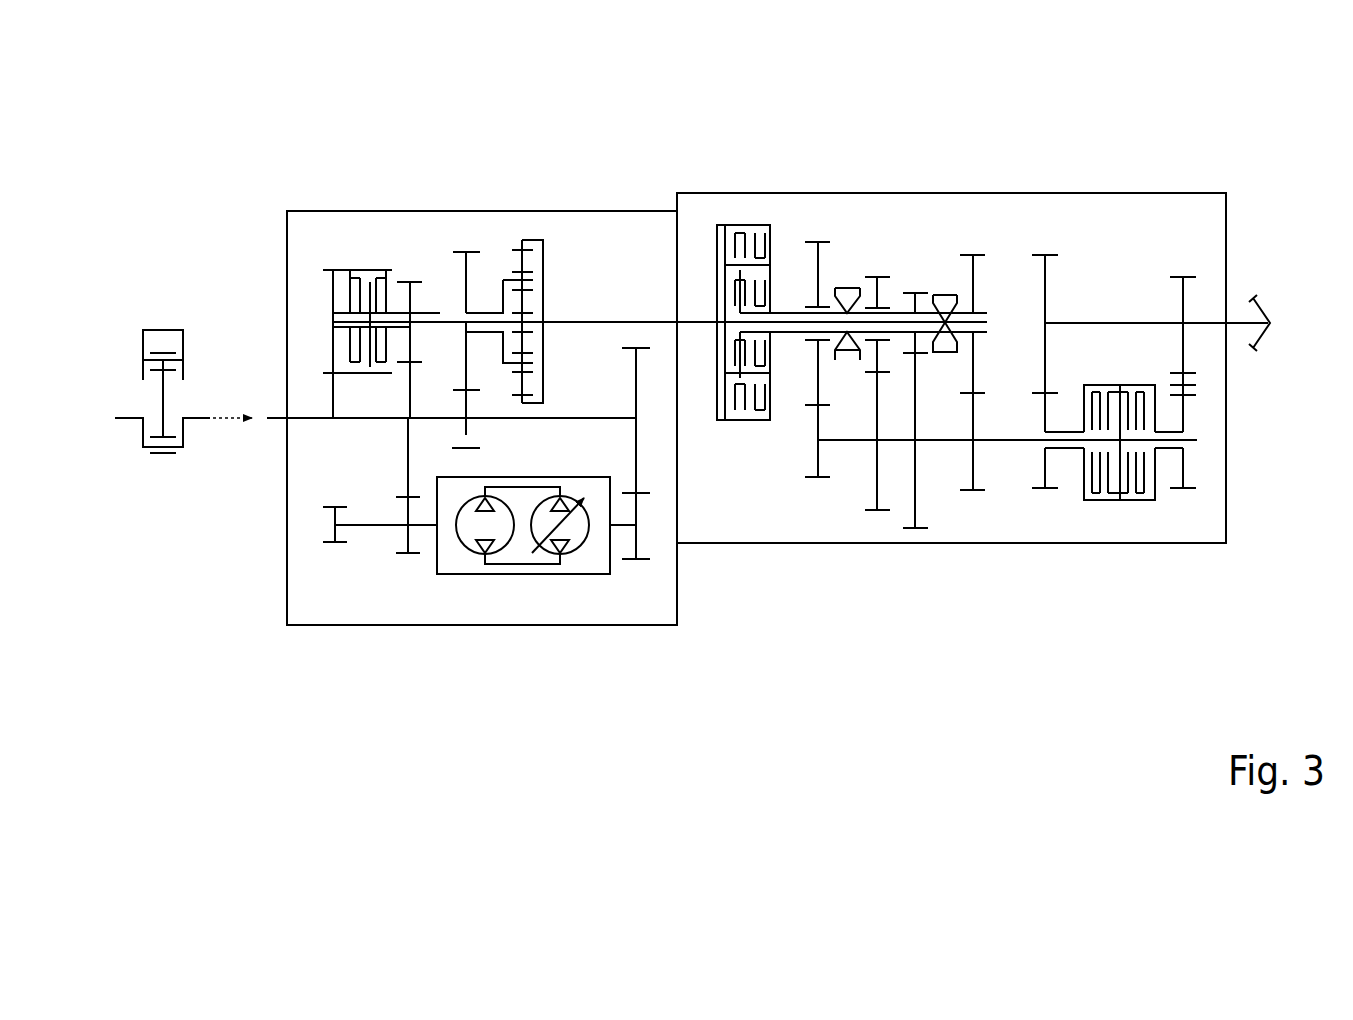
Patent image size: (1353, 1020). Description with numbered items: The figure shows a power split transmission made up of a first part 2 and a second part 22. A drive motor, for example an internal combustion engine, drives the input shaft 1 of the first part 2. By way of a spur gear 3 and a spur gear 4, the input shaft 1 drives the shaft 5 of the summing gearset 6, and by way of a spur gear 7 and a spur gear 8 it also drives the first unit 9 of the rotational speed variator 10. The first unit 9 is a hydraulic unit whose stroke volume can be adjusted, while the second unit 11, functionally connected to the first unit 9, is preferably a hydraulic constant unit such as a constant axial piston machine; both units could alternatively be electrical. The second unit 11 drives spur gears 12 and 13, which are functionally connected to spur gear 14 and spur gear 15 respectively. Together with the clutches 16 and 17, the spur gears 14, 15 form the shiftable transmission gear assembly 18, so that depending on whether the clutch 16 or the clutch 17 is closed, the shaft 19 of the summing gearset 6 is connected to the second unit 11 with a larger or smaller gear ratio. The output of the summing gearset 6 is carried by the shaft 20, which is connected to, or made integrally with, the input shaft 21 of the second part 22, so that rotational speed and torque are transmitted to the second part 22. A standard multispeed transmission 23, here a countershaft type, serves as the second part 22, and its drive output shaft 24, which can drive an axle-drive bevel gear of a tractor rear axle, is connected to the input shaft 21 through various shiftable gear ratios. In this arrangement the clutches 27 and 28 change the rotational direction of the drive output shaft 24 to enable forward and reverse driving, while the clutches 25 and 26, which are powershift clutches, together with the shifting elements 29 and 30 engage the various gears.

The input shaft 1 is at (272, 418).
The first part 2 is at (287, 583).
The spur gear 3 is at (465, 435).
The spur gear 4 is at (466, 252).
The shaft 5 is at (486, 310).
The summing gearset 6 is at (545, 228).
The spur gear 7 is at (636, 457).
The spur gear 8 is at (636, 562).
The first unit 9 is at (577, 555).
The rotational speed variator 10 is at (518, 575).
The second unit 11 is at (467, 555).
The spur gear 12 is at (408, 556).
The spur gear 13 is at (335, 547).
The spur gear 14 is at (408, 288).
The spur gear 15 is at (333, 287).
The clutch 16 is at (250, 244).
The clutch 17 is at (368, 258).
The shiftable transmission gear assembly 18 is at (305, 307).
The shaft 19 is at (433, 318).
The shaft 20 is at (623, 321).
The input shaft 21 is at (687, 321).
The second part 22 is at (957, 545).
The multispeed transmission 23 is at (1001, 400).
The drive output shaft 24 is at (1243, 323).
The clutch 25 is at (743, 427).
The clutch 26 is at (780, 275).
The clutch 27 is at (1105, 512).
The clutch 28 is at (1143, 512).
The shifting element 29 is at (847, 286).
The shifting element 30 is at (945, 294).